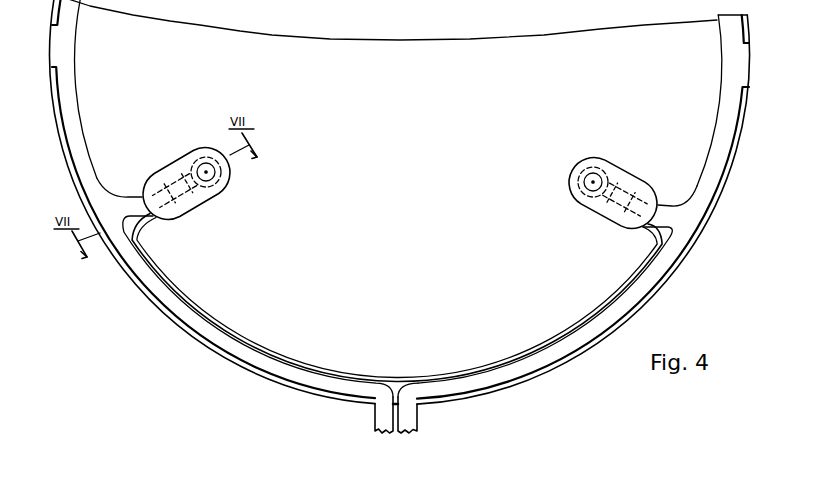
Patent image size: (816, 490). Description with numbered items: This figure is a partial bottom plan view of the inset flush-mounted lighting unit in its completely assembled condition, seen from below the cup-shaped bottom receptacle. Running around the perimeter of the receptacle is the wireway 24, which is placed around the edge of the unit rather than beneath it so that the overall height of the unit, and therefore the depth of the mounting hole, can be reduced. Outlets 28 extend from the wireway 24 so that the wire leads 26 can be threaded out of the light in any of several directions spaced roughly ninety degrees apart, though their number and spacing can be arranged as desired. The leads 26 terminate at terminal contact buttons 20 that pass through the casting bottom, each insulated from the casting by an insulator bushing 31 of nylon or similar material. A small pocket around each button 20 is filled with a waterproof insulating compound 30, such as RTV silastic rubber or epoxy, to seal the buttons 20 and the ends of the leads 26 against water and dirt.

The terminal contact button 20 is at (193, 186).
The wireway 24 is at (721, 162).
The wire lead 26 is at (413, 426).
The outlet 28 is at (55, 52).
The waterproof insulating compound 30 is at (188, 206).
The insulator bushing 31 is at (212, 206).